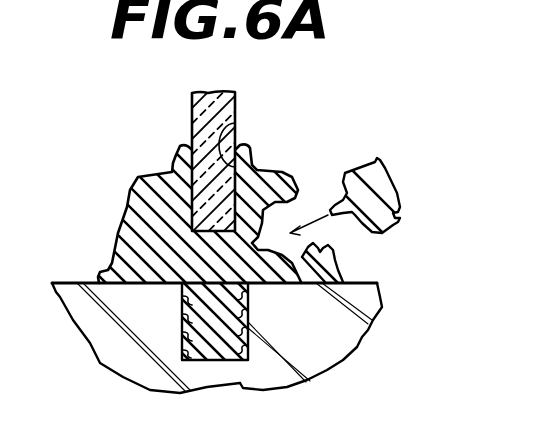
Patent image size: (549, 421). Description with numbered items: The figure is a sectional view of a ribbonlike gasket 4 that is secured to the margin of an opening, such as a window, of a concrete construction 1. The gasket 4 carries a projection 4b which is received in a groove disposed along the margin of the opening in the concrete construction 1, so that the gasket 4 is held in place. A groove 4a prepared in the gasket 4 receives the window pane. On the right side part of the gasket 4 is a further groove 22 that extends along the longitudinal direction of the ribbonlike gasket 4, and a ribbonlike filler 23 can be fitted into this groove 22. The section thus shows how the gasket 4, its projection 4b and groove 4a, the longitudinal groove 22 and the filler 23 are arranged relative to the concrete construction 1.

The concrete construction 1 is at (336, 341).
The ribbonlike gasket 4 is at (148, 180).
The groove 4a is at (235, 119).
The projection 4b is at (220, 345).
The groove 22 is at (295, 250).
The ribbonlike filler 23 is at (383, 181).